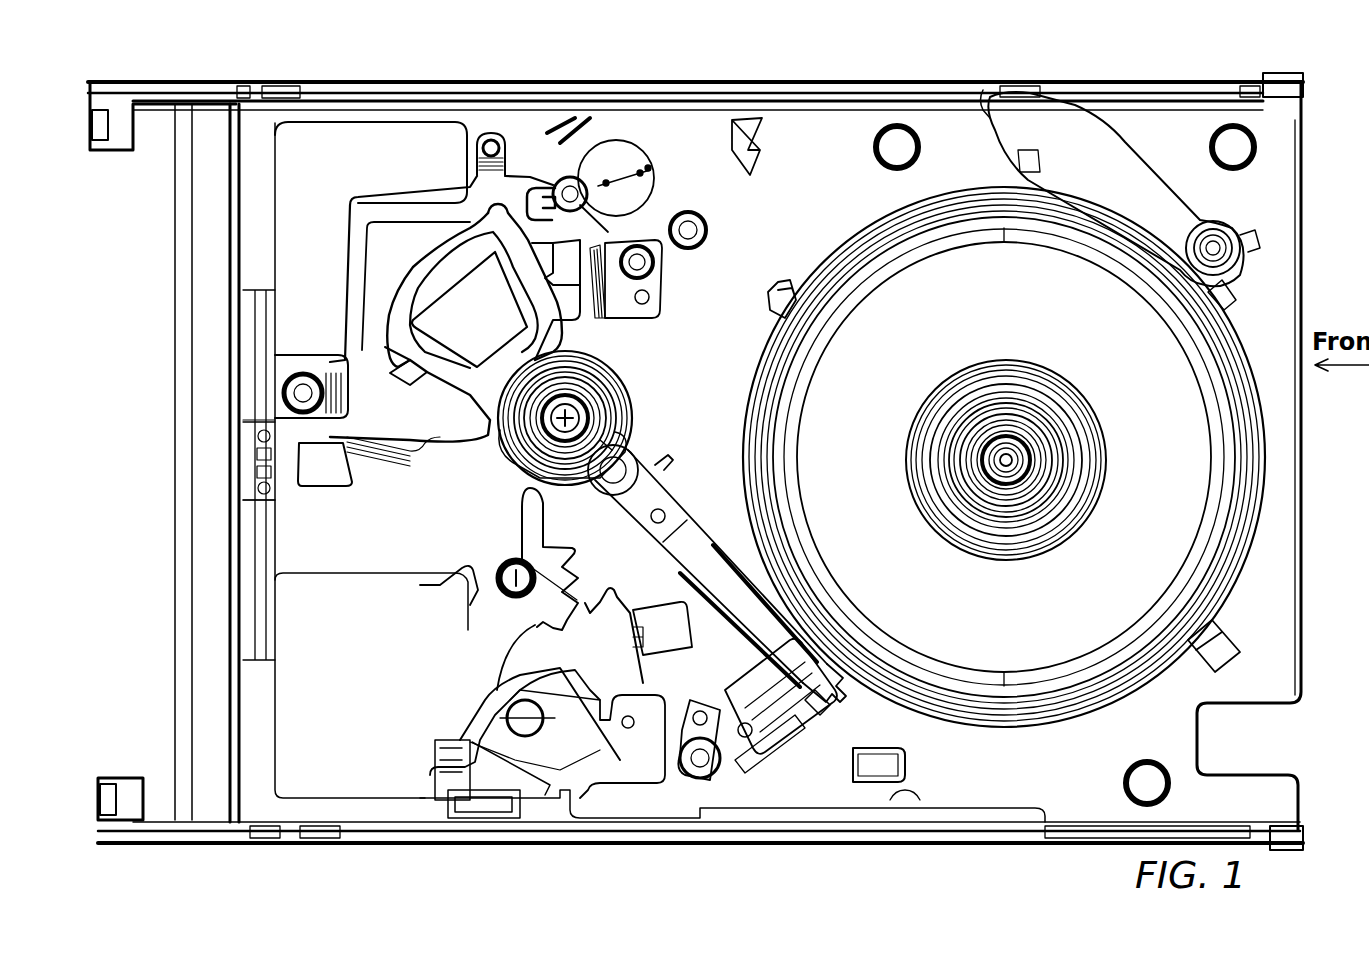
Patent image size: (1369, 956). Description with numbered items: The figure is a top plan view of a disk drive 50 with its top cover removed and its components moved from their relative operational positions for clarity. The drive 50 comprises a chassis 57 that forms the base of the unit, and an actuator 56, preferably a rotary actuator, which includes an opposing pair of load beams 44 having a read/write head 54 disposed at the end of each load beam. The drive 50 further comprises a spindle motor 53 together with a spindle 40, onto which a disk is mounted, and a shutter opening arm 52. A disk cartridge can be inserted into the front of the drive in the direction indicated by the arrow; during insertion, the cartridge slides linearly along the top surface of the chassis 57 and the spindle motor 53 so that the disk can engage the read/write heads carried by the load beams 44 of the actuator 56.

The spindle 40 is at (1100, 426).
The load beams 44 is at (675, 508).
The disk drive 50 is at (239, 893).
The shutter opening arm 52 is at (1097, 161).
The spindle motor 53 is at (925, 311).
The read/write head 54 is at (820, 700).
The actuator 56 is at (615, 402).
The chassis 57 is at (692, 148).